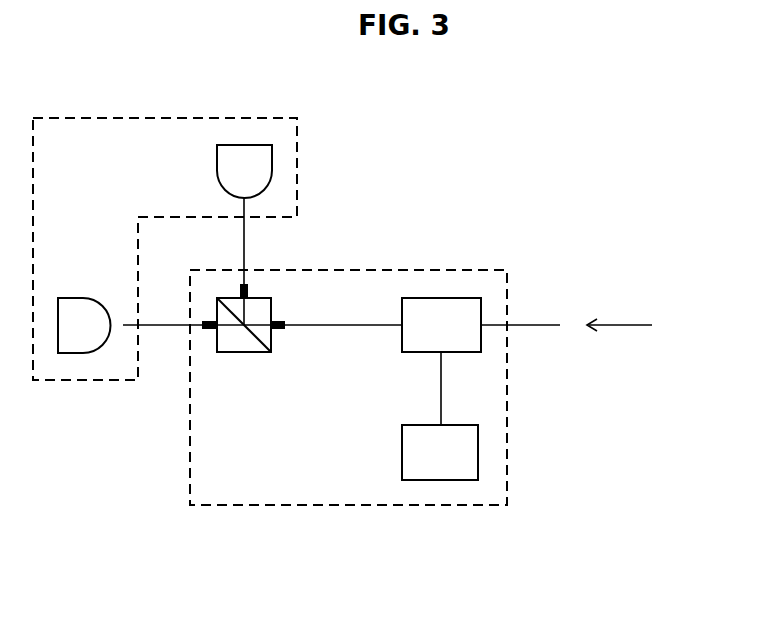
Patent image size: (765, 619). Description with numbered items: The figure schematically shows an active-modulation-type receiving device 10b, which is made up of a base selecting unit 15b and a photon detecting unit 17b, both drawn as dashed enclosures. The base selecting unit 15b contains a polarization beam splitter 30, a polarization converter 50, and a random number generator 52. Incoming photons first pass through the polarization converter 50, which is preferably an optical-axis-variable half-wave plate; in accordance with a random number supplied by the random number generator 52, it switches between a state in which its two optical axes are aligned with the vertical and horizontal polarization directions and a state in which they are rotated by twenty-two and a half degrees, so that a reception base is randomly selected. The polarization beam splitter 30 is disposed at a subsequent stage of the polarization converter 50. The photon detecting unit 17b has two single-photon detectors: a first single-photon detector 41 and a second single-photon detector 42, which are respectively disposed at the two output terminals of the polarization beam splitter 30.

The receiving device 10b is at (523, 165).
The photon detecting unit 17b is at (70, 118).
The base selecting unit 15b is at (350, 505).
The second single-photon detector 42 is at (248, 145).
The first single-photon detector 41 is at (85, 353).
The polarization beam splitter 30 is at (253, 298).
The polarization converter 50 is at (463, 298).
The random number generator 52 is at (462, 425).